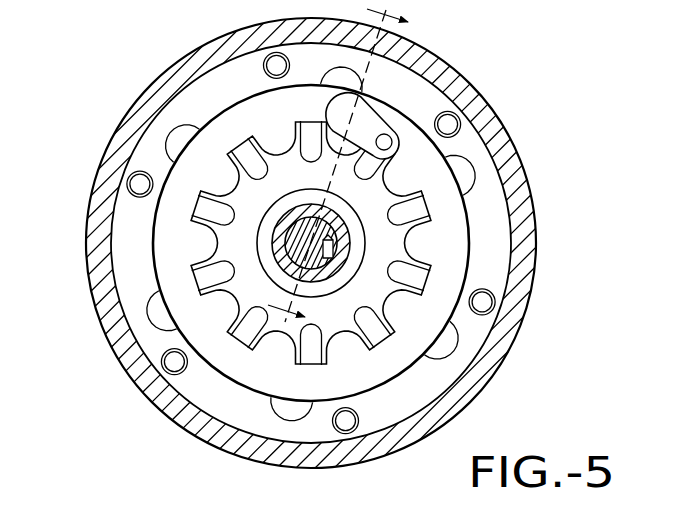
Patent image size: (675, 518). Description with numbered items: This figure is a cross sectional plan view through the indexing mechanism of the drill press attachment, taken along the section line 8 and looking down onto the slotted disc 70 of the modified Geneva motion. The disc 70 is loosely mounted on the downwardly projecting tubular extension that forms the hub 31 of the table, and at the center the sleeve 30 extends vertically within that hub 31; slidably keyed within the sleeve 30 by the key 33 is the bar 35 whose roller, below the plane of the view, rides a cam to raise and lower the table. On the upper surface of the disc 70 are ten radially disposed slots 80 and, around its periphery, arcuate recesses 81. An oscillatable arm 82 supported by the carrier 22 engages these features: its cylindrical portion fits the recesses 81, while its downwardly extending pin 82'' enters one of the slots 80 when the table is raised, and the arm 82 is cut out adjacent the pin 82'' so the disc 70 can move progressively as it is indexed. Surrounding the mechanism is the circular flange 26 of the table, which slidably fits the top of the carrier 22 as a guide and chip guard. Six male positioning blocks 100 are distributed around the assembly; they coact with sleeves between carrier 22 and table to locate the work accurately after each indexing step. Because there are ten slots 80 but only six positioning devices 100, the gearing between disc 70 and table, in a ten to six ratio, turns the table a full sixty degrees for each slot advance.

The section line 8- 8 is at (349, 167).
The carrier 22 is at (493, 236).
The circular flange 26 is at (527, 194).
The sleeve 30 is at (337, 237).
The hub 31 is at (280, 247).
The key 33 is at (334, 249).
The bar 35 is at (330, 263).
The slotted disc 70 is at (417, 241).
The radially disposed slots 80 is at (300, 156).
The arcuate recesses 81 is at (283, 146).
The oscillatable arm 82 is at (364, 117).
The pin 82'' is at (406, 122).
The positioning blocks 100 is at (266, 70).